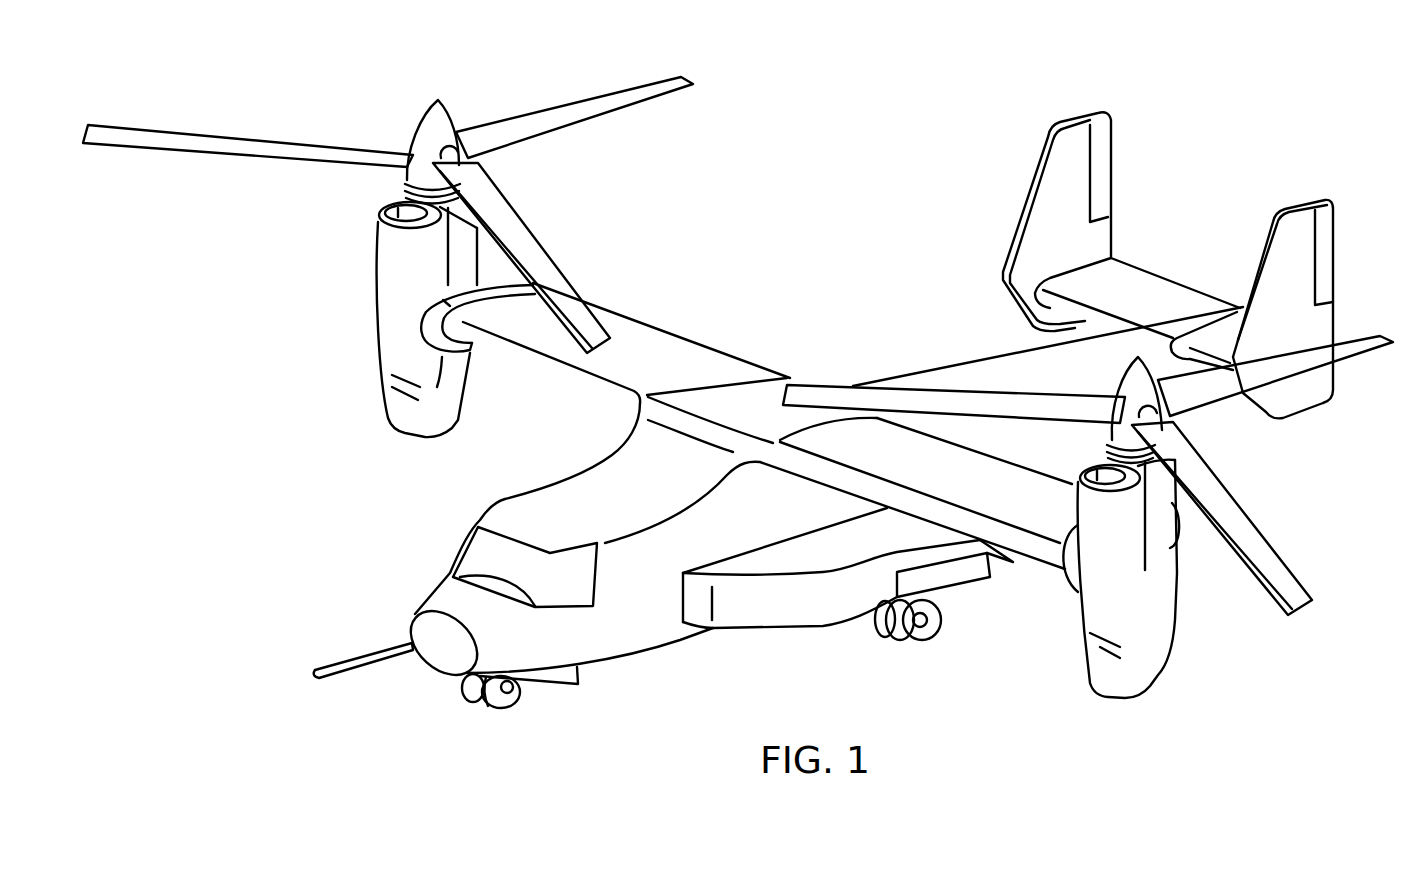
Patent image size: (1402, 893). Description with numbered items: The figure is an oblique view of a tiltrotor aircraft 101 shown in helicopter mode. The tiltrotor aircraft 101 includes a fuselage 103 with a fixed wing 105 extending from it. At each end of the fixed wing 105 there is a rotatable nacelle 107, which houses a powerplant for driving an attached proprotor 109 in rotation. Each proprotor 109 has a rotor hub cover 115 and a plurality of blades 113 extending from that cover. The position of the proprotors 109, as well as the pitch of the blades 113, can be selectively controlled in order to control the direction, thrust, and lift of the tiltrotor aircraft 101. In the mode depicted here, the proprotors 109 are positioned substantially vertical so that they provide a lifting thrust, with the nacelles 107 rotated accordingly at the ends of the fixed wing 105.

The tiltrotor aircraft 101 is at (877, 163).
The fuselage 103 is at (730, 628).
The fixed wing 105 is at (677, 348).
The rotatable nacelle 107 is at (375, 268).
The proprotor 109 is at (352, 190).
The blades 113 is at (253, 125).
The rotor hub cover 115 is at (420, 118).